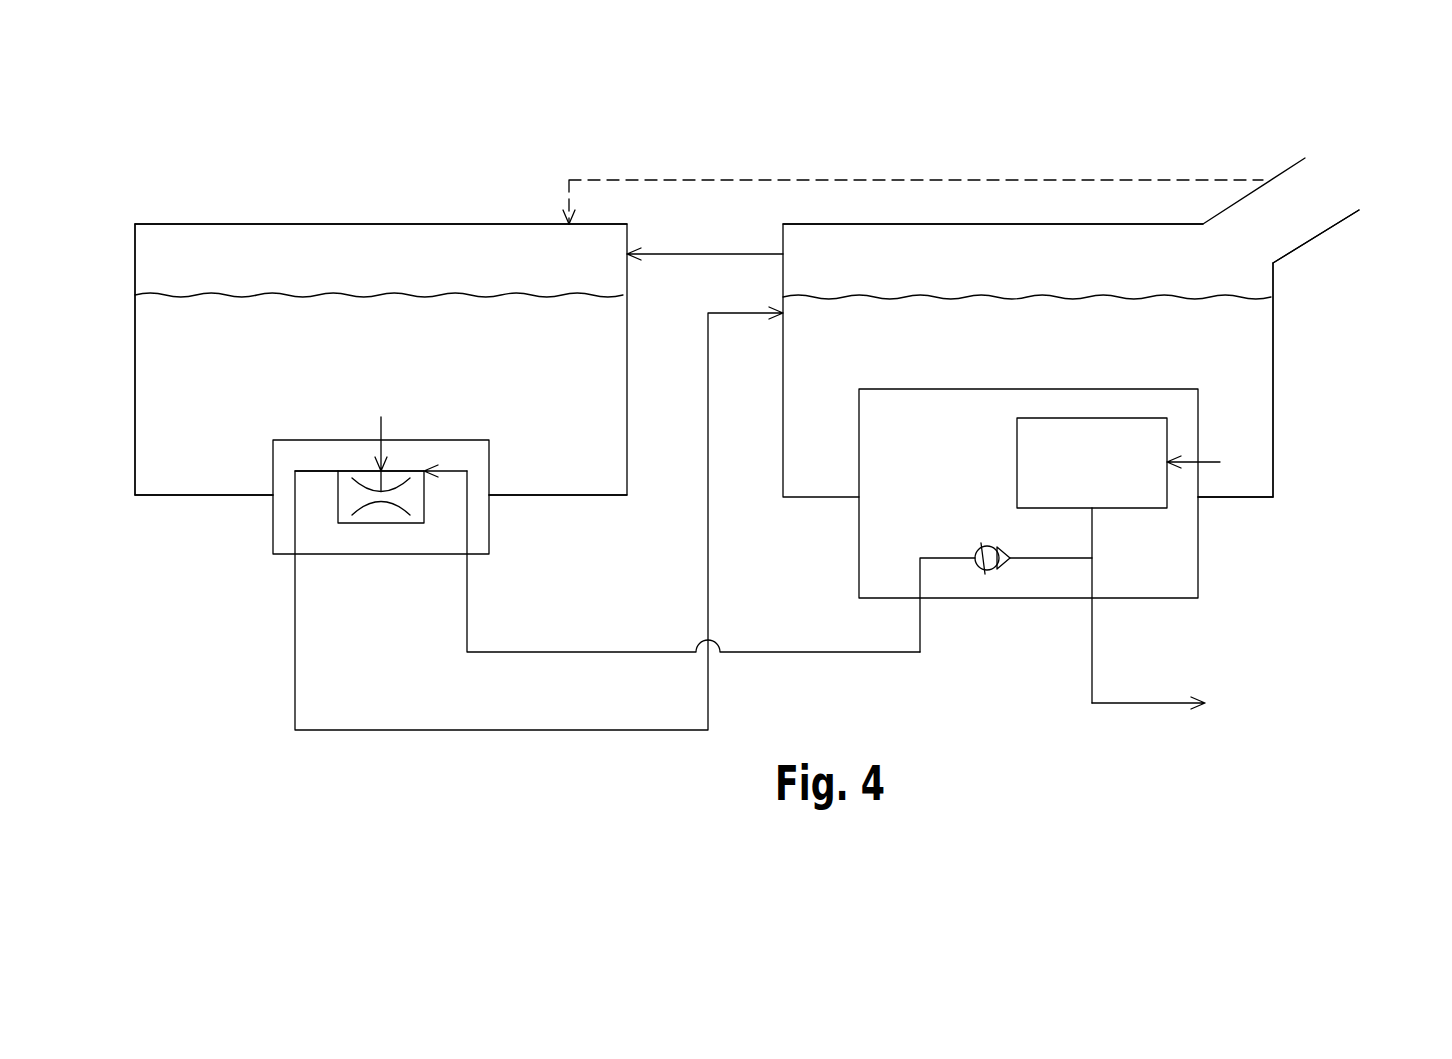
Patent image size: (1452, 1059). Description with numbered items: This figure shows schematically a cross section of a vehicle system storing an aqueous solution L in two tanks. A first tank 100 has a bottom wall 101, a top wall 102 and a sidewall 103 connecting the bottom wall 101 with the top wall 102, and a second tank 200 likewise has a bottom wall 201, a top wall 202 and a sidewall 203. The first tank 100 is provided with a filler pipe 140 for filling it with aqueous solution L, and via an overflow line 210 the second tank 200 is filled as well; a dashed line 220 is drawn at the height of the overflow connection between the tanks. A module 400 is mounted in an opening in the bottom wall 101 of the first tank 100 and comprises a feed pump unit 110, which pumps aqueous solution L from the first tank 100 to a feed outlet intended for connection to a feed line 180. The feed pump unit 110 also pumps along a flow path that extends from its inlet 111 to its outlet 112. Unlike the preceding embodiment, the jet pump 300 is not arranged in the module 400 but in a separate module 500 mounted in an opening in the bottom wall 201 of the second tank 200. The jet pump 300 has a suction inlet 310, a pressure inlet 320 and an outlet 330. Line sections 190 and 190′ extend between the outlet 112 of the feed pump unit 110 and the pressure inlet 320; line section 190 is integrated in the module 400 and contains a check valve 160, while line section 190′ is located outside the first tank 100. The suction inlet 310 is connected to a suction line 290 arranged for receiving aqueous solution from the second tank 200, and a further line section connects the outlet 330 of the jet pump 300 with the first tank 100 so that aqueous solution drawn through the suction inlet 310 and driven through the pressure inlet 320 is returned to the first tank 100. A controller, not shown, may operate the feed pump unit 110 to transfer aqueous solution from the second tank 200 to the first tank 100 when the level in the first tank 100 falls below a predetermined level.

The first tank 100 is at (1051, 206).
The bottom wall 101 is at (1258, 497).
The top wall 102 is at (938, 224).
The sidewall 103 is at (1273, 405).
The feed pump unit 110 is at (1167, 433).
The inlet of feed pump unit 111 is at (1207, 462).
The outlet of feed pump unit 112 is at (1092, 527).
The filler pipe 140 is at (1325, 233).
The check valve 160 is at (984, 544).
The feed line 180 is at (1140, 705).
The line section 190 is at (1045, 558).
The line section 190′ is at (840, 654).
The second tank 200 is at (255, 188).
The bottom wall 201 is at (175, 495).
The top wall 202 is at (330, 224).
The sidewall 203 is at (134, 383).
The overflow line 210 is at (713, 253).
The maximum liquid level 220 is at (788, 180).
The suction line 290 is at (383, 425).
The jet pump 300 is at (413, 471).
The suction inlet 310 is at (378, 471).
The pressure inlet 320 is at (456, 494).
The outlet 330 is at (318, 493).
The module 400 is at (1040, 356).
The separate module 500 is at (384, 589).
The aqueous solution L is at (585, 413).